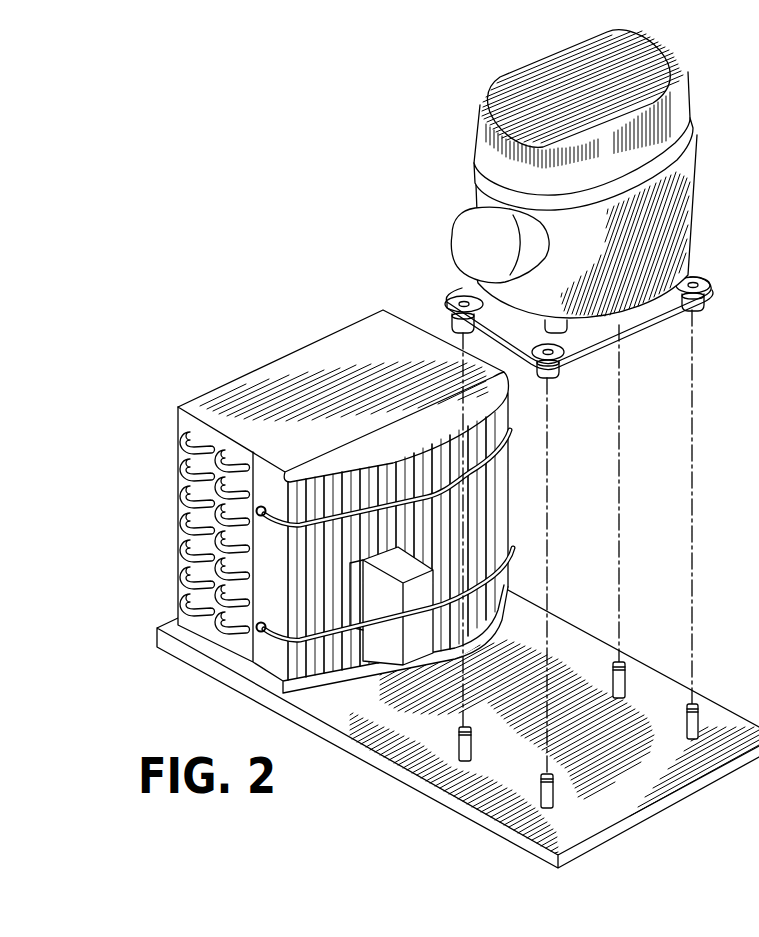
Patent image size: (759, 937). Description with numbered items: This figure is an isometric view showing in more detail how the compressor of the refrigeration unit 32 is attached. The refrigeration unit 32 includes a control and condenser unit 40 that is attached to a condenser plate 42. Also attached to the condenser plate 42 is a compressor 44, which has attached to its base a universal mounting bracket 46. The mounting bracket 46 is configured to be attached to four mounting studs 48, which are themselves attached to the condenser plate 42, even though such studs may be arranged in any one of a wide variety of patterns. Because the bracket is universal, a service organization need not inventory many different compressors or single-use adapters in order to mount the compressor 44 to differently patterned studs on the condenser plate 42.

The refrigeration unit 32 is at (157, 72).
The control and condenser unit 40 is at (320, 357).
The condenser plate 42 is at (370, 733).
The compressor 44 is at (677, 104).
The universal mounting bracket 46 is at (577, 338).
The mounting studs 48 is at (625, 678).